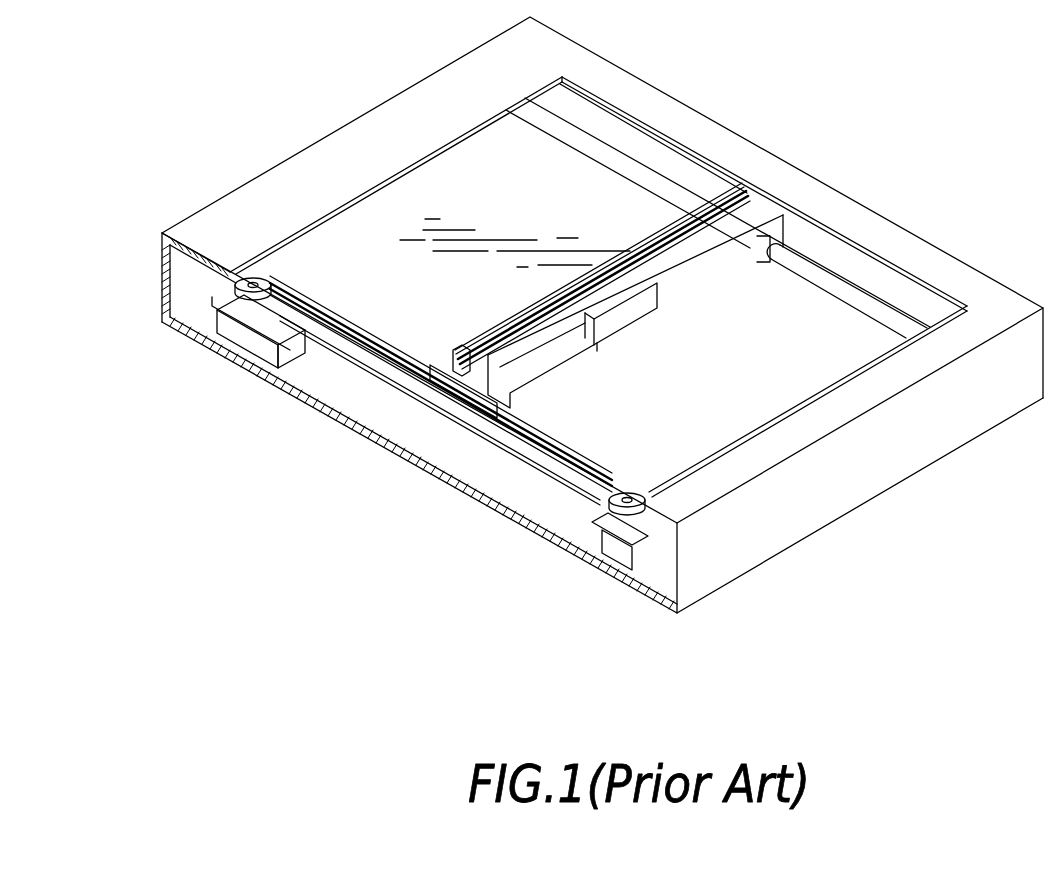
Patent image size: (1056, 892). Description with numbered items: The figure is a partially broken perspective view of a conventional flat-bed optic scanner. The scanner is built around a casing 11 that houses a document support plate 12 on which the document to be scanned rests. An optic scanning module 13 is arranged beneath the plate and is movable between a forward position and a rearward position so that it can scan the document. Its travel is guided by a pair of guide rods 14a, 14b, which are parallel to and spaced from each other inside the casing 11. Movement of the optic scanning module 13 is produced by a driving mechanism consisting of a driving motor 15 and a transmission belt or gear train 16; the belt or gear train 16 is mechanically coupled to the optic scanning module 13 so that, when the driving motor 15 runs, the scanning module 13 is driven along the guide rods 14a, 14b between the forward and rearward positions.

The casing 11 is at (857, 470).
The document support plate 12 is at (435, 200).
The optic scanning module 13 is at (723, 207).
The guide rod 14a is at (828, 280).
The guide rod 14b is at (543, 447).
The driving motor 15 is at (243, 338).
The transmission belt or gear train 16 is at (337, 355).